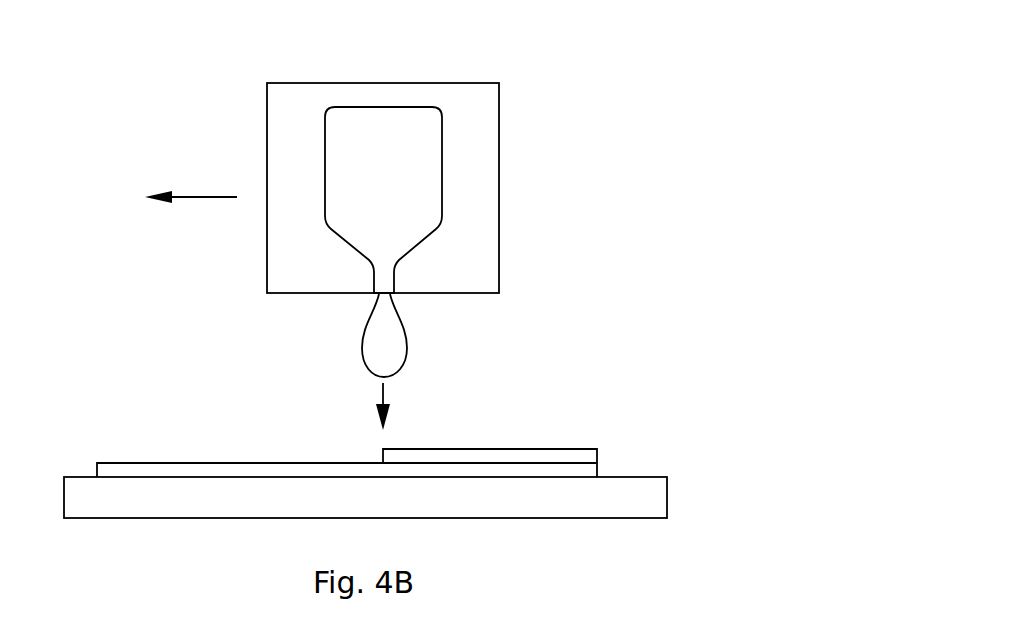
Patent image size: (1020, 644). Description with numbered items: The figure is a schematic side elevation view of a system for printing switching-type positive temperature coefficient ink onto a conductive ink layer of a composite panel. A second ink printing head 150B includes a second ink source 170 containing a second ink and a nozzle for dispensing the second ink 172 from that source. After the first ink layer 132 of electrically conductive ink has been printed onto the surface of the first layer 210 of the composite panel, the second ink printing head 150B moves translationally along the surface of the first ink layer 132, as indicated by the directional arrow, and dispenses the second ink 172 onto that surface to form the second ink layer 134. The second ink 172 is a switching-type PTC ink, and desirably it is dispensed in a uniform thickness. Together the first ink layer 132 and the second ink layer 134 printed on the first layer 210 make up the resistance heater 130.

The second ink printing head 150B is at (522, 99).
The second ink source 170 is at (398, 196).
The second ink 172 is at (432, 345).
The resistance heater 130 is at (542, 394).
The first ink layer 132 is at (592, 470).
The second ink layer 134 is at (576, 453).
The first layer 210 is at (600, 492).